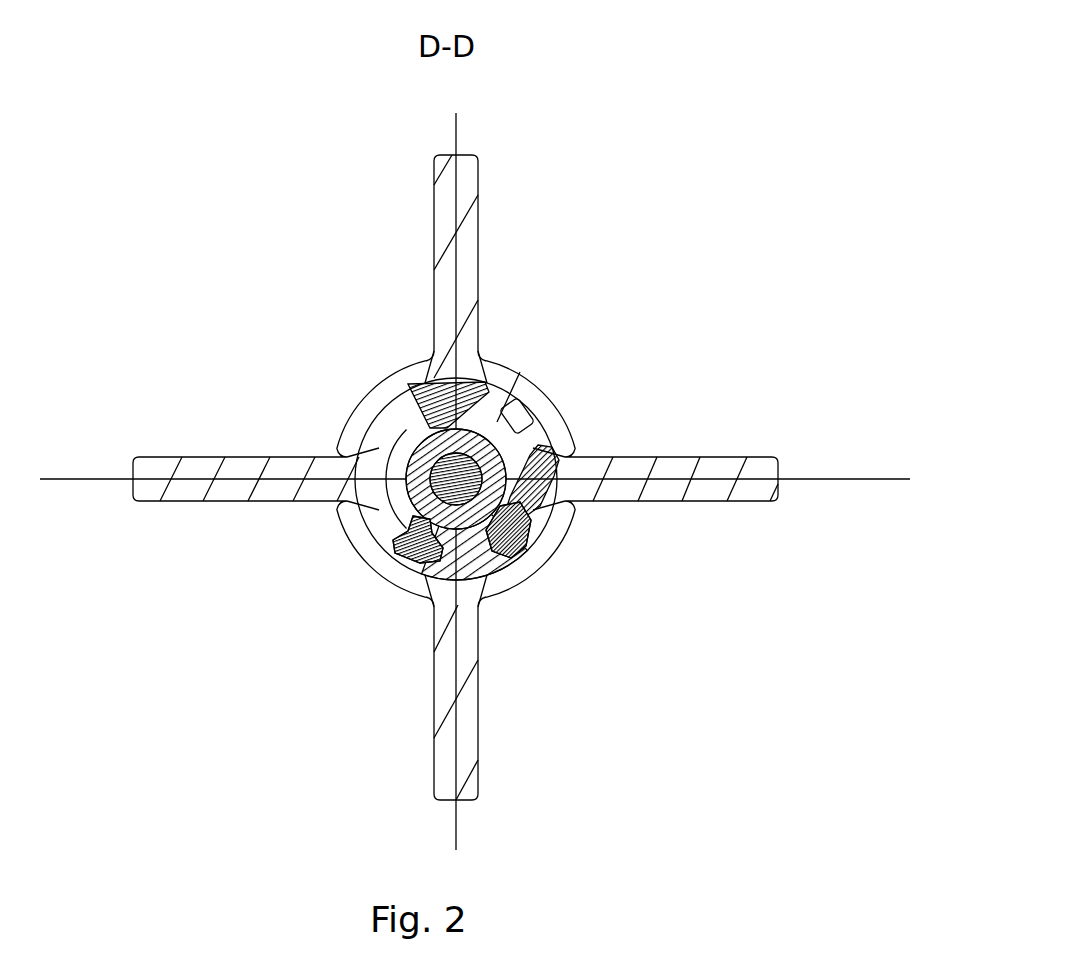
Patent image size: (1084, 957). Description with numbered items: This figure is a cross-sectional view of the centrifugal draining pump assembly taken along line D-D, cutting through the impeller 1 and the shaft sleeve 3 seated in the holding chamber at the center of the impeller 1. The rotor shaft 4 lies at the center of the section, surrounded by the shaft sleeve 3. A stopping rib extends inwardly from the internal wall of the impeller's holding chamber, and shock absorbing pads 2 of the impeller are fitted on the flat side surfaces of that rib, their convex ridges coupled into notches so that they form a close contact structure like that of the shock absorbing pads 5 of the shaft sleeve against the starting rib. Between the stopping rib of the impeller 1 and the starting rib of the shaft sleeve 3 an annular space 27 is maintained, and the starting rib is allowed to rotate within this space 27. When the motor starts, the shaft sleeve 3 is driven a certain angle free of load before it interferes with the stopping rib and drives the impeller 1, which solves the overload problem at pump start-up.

The impeller 1 is at (476, 722).
The shock absorbing pad 2 is at (423, 392).
The shaft sleeve 3 is at (405, 484).
The rotor shaft 4 is at (402, 476).
The shock absorbing pad 5 is at (395, 545).
The annular space 27 is at (374, 507).